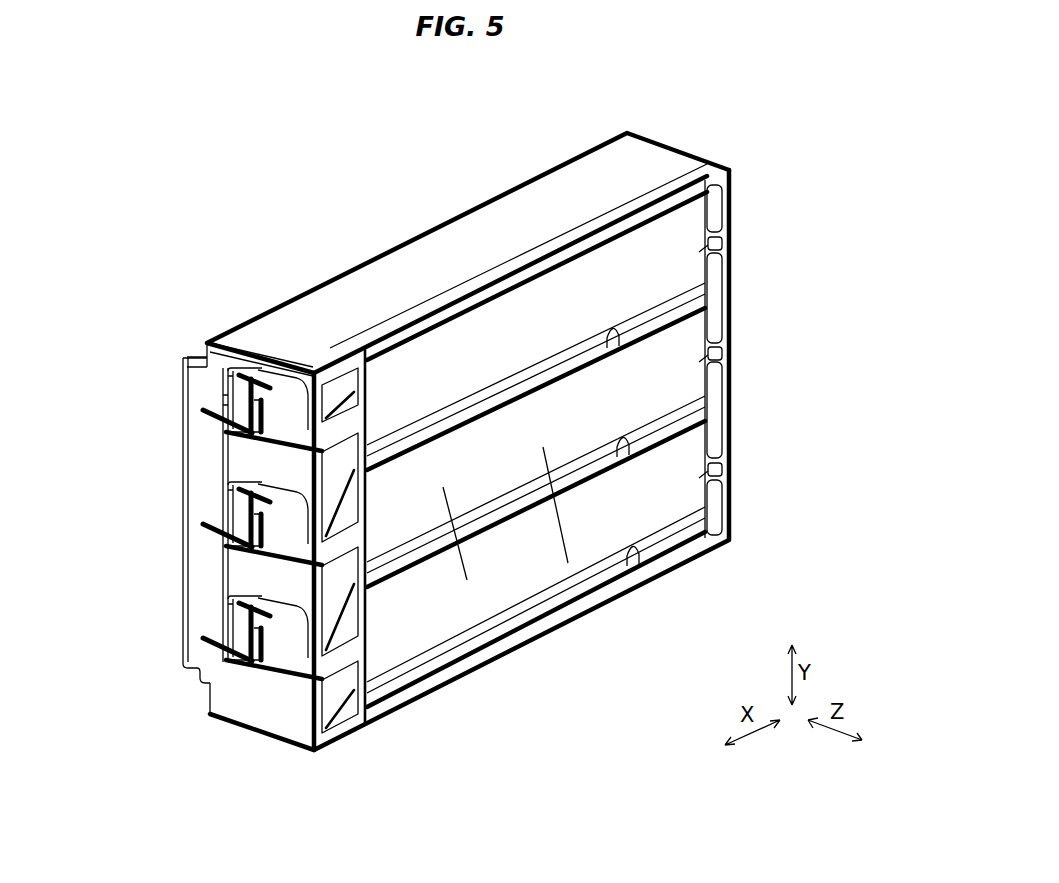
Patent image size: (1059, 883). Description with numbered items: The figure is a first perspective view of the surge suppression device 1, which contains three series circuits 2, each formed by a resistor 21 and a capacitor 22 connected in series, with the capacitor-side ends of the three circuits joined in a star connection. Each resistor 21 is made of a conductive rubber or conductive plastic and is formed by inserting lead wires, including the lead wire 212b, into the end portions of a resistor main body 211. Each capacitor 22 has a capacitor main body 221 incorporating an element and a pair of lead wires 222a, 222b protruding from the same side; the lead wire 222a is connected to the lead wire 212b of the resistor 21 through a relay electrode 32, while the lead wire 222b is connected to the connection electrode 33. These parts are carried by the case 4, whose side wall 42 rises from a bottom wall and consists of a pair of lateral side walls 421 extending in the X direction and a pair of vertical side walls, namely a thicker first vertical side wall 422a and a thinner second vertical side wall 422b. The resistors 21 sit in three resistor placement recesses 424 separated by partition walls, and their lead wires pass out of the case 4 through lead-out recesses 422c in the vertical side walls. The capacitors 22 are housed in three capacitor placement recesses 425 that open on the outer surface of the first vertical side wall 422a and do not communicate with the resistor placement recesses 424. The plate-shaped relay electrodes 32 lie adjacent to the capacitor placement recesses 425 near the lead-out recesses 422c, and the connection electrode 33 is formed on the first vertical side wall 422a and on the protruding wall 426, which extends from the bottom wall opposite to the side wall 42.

The surge suppression device 1 is at (297, 163).
The series circuit 2 is at (753, 214).
The resistor 21 is at (467, 580).
The resistor main body 211 is at (568, 563).
The lead wire 212b is at (264, 412).
The capacitor 22 is at (235, 400).
The capacitor main body 221 is at (258, 626).
The lead wire 222a is at (258, 375).
The lead wire 222b is at (210, 414).
The relay electrode 32 is at (287, 397).
The connection electrode 33 is at (205, 545).
The case 4 is at (521, 218).
The side wall 42 is at (362, 290).
The lateral side wall 421 is at (442, 262).
The first vertical side wall 422a is at (265, 476).
The second vertical side wall 422b is at (725, 290).
The lead-out recess 422c is at (725, 240).
The resistor placement recess 424 is at (615, 344).
The capacitor placement recess 425 is at (233, 387).
The protruding wall 426 is at (227, 400).